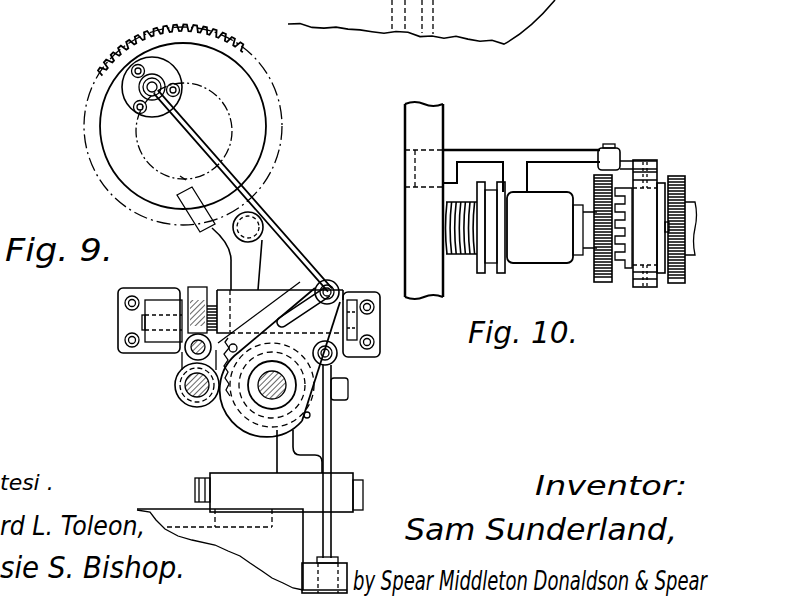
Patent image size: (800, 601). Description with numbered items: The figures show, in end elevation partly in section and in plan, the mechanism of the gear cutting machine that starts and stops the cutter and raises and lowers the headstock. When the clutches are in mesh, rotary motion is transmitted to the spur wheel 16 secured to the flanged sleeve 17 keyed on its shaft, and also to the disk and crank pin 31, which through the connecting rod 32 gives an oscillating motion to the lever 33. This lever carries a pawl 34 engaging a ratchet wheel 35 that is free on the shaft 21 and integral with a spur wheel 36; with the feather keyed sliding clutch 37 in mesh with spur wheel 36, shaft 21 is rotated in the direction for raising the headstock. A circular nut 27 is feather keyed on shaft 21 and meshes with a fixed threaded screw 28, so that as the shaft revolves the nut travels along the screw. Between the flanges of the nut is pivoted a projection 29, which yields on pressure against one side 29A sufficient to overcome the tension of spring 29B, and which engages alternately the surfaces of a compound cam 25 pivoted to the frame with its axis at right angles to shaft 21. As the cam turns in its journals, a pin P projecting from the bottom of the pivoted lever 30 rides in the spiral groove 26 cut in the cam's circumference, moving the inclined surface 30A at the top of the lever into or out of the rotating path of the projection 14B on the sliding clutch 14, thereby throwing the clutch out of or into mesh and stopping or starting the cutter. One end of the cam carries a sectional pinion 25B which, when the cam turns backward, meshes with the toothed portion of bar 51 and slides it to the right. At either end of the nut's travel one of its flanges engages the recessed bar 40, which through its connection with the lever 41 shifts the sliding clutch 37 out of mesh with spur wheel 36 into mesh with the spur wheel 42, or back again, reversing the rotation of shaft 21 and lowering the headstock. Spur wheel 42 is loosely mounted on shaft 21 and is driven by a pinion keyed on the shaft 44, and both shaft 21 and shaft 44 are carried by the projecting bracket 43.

In FIG. 9, the spur wheel 16 is at (158, 38).
In FIG. 9, the flanged sleeve 17 is at (255, 105).
In FIG. 9, the disk and crank pin 31 is at (140, 88).
In FIG. 9, the connecting rod 32 is at (212, 134).
In FIG. 9, the sliding clutch 14 is at (146, 160).
In FIG. 9, the projection of sliding clutch 14B is at (183, 178).
In FIG. 9, the pivoted lever 30 is at (232, 258).
In FIG. 9, the inclined surface 30A is at (180, 202).
In FIG. 9, the spiral groove 26 is at (226, 300).
In FIG. 9, the compound cam 25 is at (243, 300).
In FIG. 9, the pin P is at (268, 300).
In FIG. 9, the projection 29 is at (306, 282).
In FIG. 9, the yielding side of projection 29A is at (280, 362).
In FIG. 9, the spring 29B is at (228, 402).
In FIG. 9, the pawl 34 is at (346, 300).
In FIG. 9, the lever 33 is at (348, 382).
In FIG. 9, the spur wheel 36 is at (318, 416).
In FIG. 10, the spur wheel 36 is at (676, 284).
In FIG. 9, the ratchet wheel 35 is at (300, 441).
In FIG. 9, the shaft 21 is at (266, 400).
In FIG. 10, the shaft 21 is at (633, 283).
In FIG. 9, the projecting bracket 43 is at (242, 549).
In FIG. 9, the sectional pinion 25B is at (183, 345).
In FIG. 9, the bar 51 is at (186, 357).
In FIG. 9, the shaft 44 is at (183, 395).
In FIG. 10, the fixed threaded screw 28 is at (444, 233).
In FIG. 10, the recessed bar 40 is at (495, 150).
In FIG. 10, the lever 41 is at (625, 160).
In FIG. 10, the circular nut 27 is at (537, 227).
In FIG. 10, the spur wheel 42 is at (597, 278).
In FIG. 10, the sliding clutch 37 is at (646, 216).